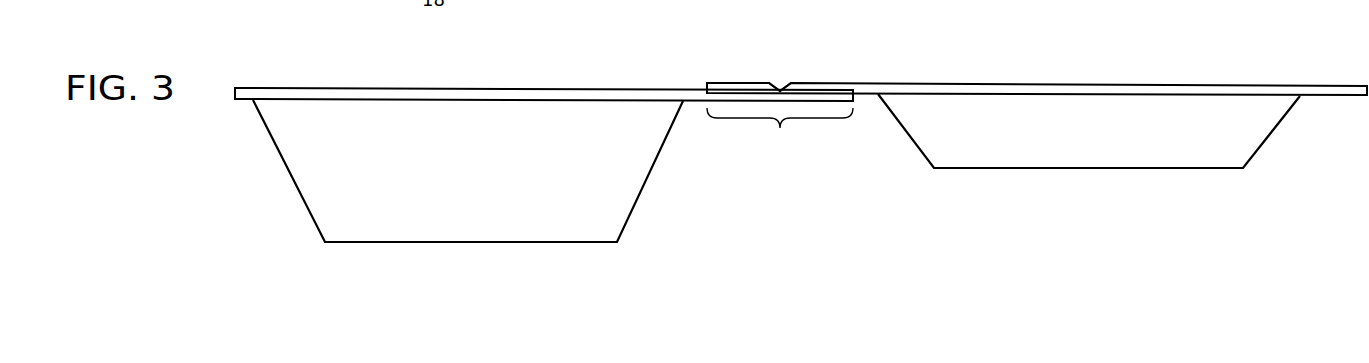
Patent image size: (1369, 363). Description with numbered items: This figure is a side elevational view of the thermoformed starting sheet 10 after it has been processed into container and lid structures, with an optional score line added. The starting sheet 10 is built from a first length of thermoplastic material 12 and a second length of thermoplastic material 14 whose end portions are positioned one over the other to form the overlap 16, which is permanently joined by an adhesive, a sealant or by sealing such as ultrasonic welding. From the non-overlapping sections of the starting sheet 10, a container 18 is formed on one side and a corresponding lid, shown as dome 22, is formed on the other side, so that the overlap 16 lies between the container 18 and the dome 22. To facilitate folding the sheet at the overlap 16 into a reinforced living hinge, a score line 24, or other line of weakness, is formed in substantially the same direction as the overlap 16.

The thermoplastic starting sheet 10 is at (1037, 57).
The first length of thermoplastic material 12 is at (291, 88).
The second length of thermoplastic material 14 is at (1245, 85).
The overlap 16 is at (780, 133).
The container 18 is at (440, 243).
The dome 22 is at (1176, 168).
The score line 24 is at (778, 88).